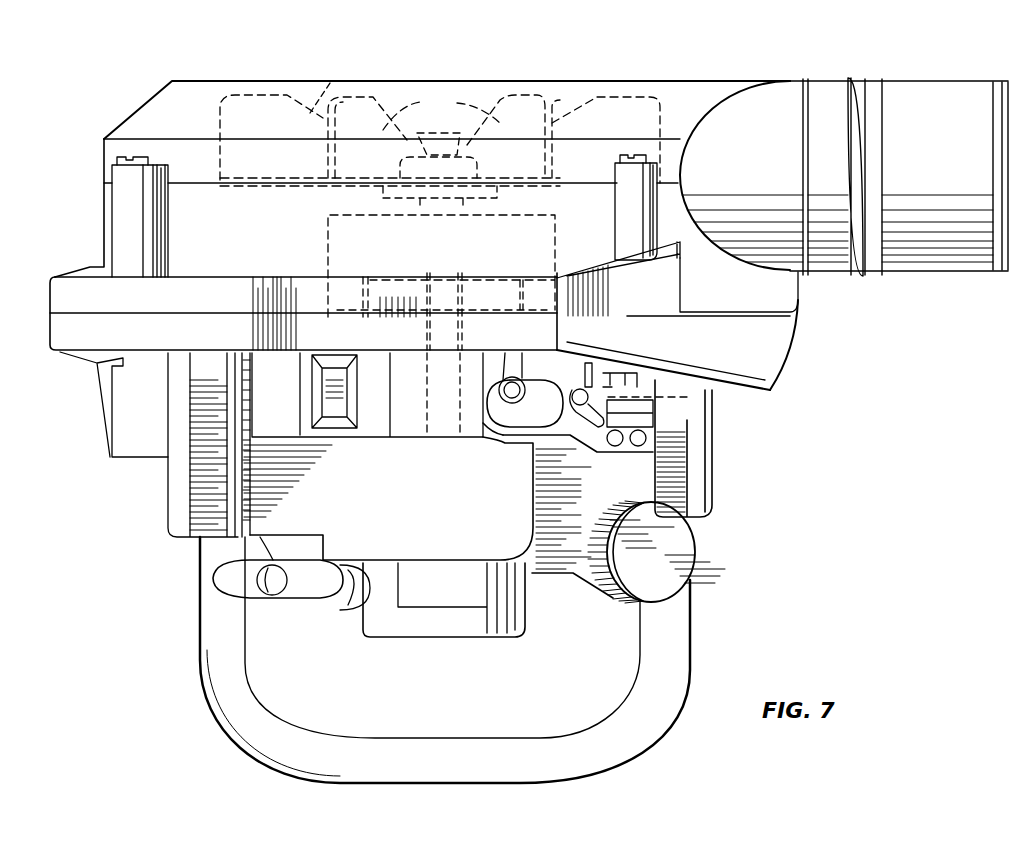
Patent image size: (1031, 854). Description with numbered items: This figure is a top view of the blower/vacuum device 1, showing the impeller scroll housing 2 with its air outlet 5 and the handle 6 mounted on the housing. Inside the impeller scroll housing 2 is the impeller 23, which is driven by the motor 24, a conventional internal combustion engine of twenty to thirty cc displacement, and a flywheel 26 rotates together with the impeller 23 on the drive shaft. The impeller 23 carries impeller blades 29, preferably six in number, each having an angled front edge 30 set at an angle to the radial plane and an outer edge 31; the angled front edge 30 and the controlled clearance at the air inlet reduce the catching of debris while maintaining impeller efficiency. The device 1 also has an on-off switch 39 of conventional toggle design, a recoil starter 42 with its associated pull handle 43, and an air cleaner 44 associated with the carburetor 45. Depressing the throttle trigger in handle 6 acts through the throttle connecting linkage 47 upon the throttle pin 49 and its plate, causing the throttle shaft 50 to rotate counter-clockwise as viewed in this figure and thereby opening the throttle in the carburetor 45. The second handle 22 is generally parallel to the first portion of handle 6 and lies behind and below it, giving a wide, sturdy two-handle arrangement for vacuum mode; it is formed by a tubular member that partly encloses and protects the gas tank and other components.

The blower/vacuum device 1 is at (832, 419).
The impeller scroll housing 2 is at (150, 96).
The air outlet 5 is at (947, 96).
The handle 6 is at (205, 292).
The second handle 22 is at (528, 767).
The impeller 23 is at (620, 105).
The motor 24 is at (452, 487).
The flywheel 26 is at (552, 232).
The impeller blades 29 is at (390, 147).
The angled front edge 30 is at (327, 90).
The outer edge 31 is at (218, 113).
The on-off switch 39 is at (342, 424).
The recoil starter 42 is at (497, 620).
The handle 43 is at (293, 600).
The air cleaner 44 is at (710, 498).
The carburetor 45 is at (600, 448).
The throttle connecting linkage 47 is at (613, 370).
The throttle pin 49 is at (592, 395).
The throttle shaft 50 is at (201, 597).